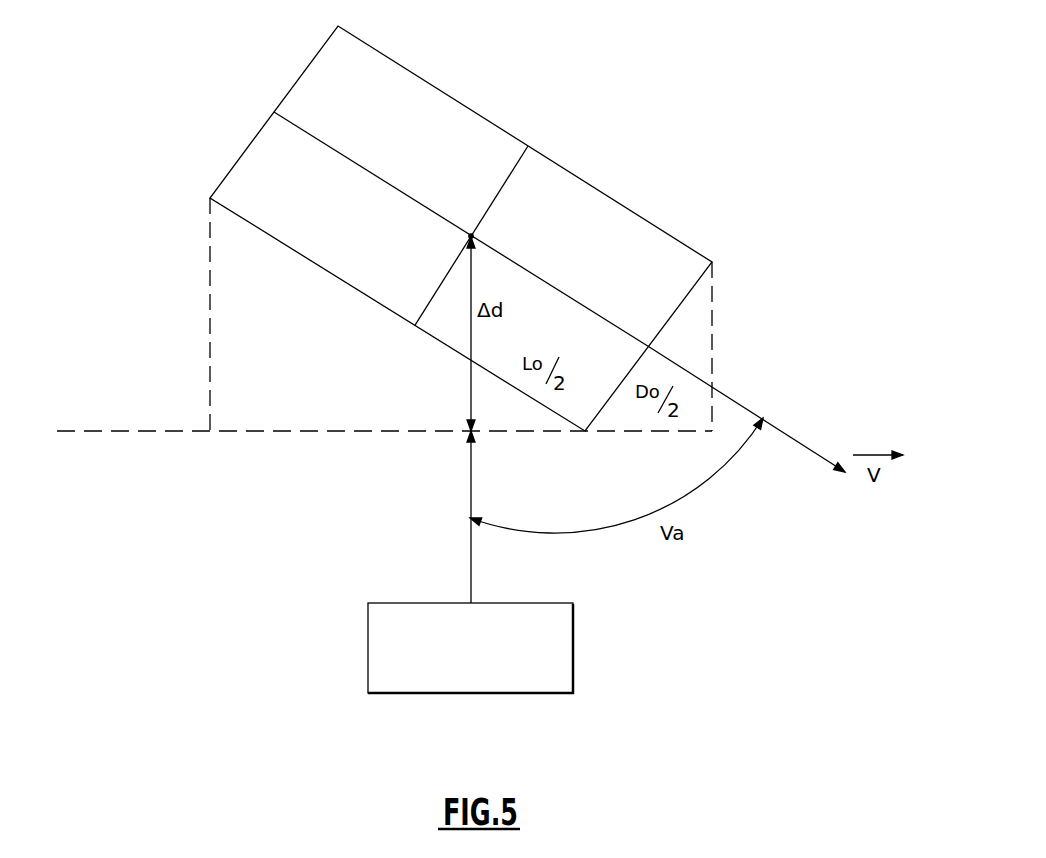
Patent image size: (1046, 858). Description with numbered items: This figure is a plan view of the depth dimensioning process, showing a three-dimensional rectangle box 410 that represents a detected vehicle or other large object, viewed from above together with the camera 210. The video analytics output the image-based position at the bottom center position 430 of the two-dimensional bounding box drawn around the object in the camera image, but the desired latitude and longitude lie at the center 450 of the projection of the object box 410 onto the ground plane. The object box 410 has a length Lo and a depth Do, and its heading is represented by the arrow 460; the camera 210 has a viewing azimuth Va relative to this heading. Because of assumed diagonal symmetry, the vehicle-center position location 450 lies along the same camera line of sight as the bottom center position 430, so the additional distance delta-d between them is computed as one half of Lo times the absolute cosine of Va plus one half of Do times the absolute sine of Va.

The camera 210 is at (575, 648).
The three-dimensional rectangle box 410 is at (640, 214).
The bottom center position 430 is at (466, 437).
The center of the rectangular projection 450 is at (473, 236).
The heading arrow 460 is at (787, 428).